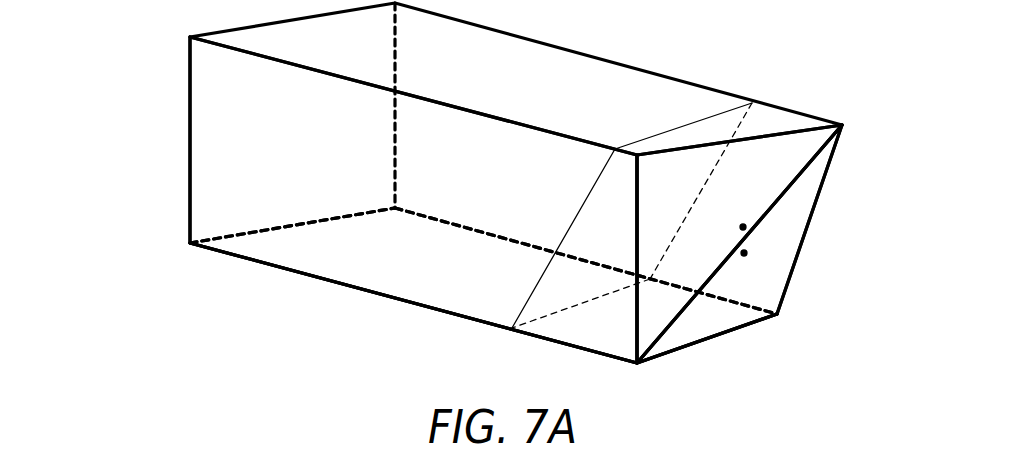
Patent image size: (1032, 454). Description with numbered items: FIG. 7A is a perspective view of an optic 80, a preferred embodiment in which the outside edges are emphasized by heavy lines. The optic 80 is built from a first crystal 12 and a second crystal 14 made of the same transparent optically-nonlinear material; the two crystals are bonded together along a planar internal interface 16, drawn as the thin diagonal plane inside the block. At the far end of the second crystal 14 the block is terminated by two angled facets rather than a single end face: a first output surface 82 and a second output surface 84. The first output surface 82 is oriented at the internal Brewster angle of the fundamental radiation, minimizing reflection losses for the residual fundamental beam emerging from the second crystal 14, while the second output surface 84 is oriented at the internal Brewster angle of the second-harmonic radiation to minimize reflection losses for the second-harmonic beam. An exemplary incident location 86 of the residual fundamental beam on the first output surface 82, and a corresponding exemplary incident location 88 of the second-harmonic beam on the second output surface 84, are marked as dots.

The optic 80 is at (150, 274).
The first crystal 12 is at (330, 272).
The second crystal 14 is at (562, 332).
The planar internal interface 16 is at (632, 169).
The first output surface 82 is at (756, 194).
The second output surface 84 is at (769, 294).
The incident location 86 is at (819, 210).
The incident location 88 is at (814, 273).